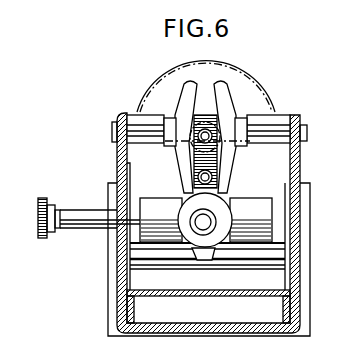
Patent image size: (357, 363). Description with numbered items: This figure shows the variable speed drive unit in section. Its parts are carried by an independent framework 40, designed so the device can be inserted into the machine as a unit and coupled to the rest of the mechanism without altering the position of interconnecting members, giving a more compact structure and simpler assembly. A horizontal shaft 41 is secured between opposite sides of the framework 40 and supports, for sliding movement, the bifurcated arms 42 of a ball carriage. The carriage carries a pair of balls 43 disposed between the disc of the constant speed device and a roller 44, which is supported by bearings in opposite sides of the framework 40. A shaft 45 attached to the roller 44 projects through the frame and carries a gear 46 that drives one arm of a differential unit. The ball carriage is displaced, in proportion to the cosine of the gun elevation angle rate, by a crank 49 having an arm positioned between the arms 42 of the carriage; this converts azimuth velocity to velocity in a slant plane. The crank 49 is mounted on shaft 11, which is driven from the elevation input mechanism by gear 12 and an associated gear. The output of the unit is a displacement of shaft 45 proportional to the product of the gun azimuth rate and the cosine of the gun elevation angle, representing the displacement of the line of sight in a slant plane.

The shaft 11 is at (202, 139).
The gear 12 is at (253, 79).
The framework 40 is at (300, 164).
The horizontal shaft 41 is at (262, 116).
The bifurcated arms 42 is at (225, 84).
The balls 43 is at (220, 228).
The roller 44 is at (171, 201).
The shaft 45 is at (88, 210).
The gear 46 is at (46, 203).
The crank 49 is at (206, 117).